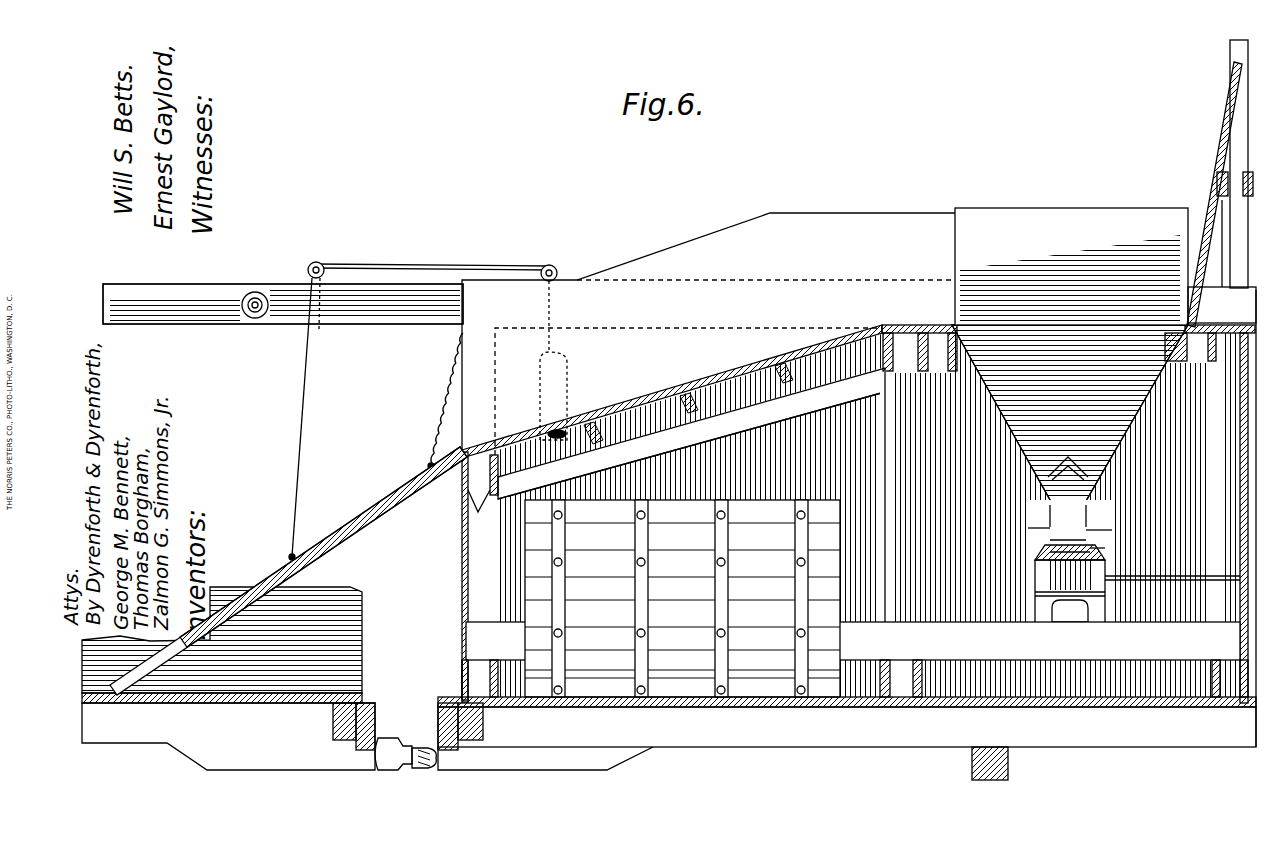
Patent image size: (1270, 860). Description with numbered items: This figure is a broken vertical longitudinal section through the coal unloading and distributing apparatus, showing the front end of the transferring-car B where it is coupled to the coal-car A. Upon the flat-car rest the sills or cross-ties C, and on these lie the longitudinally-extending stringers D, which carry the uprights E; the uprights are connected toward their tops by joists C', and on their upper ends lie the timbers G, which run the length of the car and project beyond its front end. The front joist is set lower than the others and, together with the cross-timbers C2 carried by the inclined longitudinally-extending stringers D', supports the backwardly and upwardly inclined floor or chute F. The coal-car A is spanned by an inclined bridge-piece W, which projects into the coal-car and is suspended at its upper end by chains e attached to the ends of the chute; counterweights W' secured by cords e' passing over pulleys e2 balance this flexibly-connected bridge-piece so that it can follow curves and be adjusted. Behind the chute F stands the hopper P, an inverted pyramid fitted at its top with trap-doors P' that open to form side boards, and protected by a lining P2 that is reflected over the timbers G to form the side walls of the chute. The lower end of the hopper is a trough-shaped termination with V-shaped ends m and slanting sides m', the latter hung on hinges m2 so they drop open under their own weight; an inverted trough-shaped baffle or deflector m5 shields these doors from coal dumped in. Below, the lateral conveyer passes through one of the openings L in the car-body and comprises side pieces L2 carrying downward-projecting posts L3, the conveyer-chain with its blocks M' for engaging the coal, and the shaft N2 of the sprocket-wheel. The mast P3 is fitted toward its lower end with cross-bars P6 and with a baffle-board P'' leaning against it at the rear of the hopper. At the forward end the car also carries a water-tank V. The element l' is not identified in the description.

The timbers G is at (355, 318).
The pulleys e2 is at (316, 262).
The cords e' is at (308, 419).
The chains e is at (433, 401).
The lining P2 is at (708, 334).
The counterweights W' is at (579, 360).
The inclined floor or chute F is at (660, 400).
The cross-timbers C2 is at (691, 433).
The inclined longitudinally-extending stringers D' is at (691, 445).
The hopper P is at (1070, 428).
The baffle or deflector m5 is at (1070, 462).
The hinges m2 is at (1048, 515).
The slanting sides or hinged doors m' is at (1064, 527).
The V-shaped ends m is at (1023, 552).
The openings L is at (1040, 548).
The cylinder head l' is at (1033, 576).
The shaft N2 is at (1100, 550).
The side pieces or planks L2 is at (1110, 582).
The blocks M' is at (1072, 627).
The downward-projecting posts L3 is at (1037, 612).
The posts C'' is at (920, 374).
The uprights E is at (461, 552).
The joists C' is at (483, 495).
The stringers D is at (853, 641).
The water-tank V is at (680, 660).
The transferring-car B is at (847, 738).
The sills or cross-ties C is at (656, 700).
The coal-car A is at (259, 678).
The inclined bridge-piece W is at (288, 571).
The trap-doors P' is at (1071, 266).
The mast P3 is at (1230, 55).
The cross-bars P6 is at (1246, 174).
The baffle-board P'' is at (1194, 173).